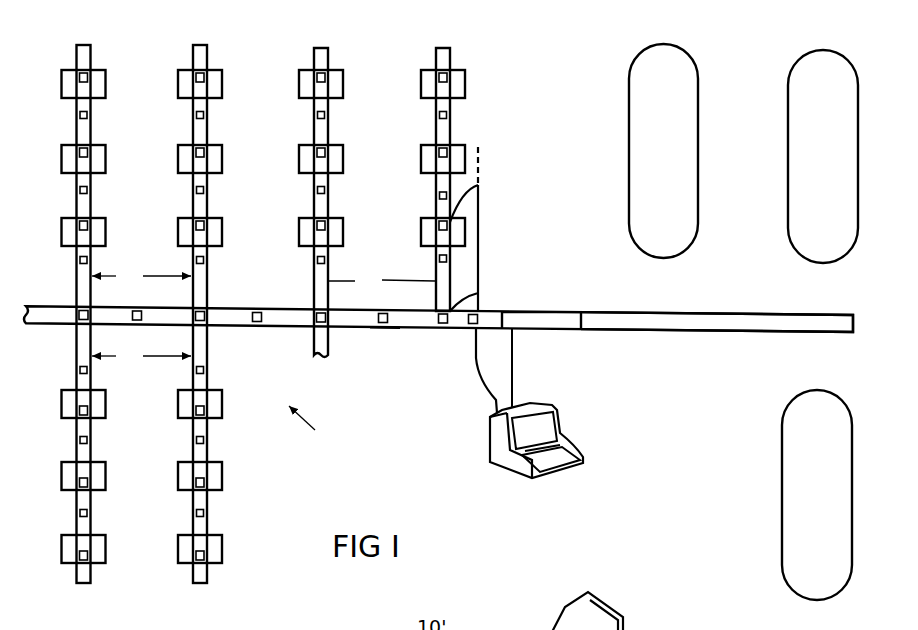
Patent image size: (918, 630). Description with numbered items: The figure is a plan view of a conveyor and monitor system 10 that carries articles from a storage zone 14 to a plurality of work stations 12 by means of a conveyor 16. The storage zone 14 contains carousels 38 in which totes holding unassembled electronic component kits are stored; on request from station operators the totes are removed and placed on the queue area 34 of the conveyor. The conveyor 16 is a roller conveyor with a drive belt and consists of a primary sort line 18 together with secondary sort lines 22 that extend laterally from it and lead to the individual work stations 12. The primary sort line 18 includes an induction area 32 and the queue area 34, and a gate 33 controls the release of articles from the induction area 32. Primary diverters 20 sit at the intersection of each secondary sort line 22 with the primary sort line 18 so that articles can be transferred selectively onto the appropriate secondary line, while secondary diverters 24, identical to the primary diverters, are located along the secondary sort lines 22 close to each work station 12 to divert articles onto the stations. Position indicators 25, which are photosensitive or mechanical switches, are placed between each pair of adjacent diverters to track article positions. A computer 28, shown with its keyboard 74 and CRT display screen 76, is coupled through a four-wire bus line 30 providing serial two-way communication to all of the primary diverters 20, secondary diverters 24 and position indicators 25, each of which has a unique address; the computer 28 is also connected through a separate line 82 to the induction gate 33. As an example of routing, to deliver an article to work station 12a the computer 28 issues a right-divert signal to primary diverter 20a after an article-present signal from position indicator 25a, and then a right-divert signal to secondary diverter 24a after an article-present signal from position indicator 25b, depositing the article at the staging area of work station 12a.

The conveyor and monitor system 10 is at (317, 426).
The work stations 12 is at (61, 84).
The work station 12a is at (467, 238).
The storage zone 14 is at (744, 253).
The conveyor 16 is at (387, 332).
The primary sort line 18 is at (357, 330).
The primary diverters 20 is at (78, 320).
The primary diverter 20a is at (441, 328).
The secondary sort lines 22 is at (313, 346).
The secondary diverters 24 is at (82, 150).
The secondary diverter 24a is at (440, 226).
The position indicators 25 is at (194, 115).
The position indicator 25a is at (478, 313).
The position indicator 25b is at (438, 259).
The computer 28 is at (561, 420).
The bus line 30 is at (481, 222).
The induction area 32 is at (566, 313).
The gate 33 is at (503, 313).
The queue area 34 is at (694, 316).
The carousels 38 is at (678, 126).
The keyboard 74 is at (555, 455).
The CRT display screen 76 is at (526, 430).
The line 82 is at (514, 366).